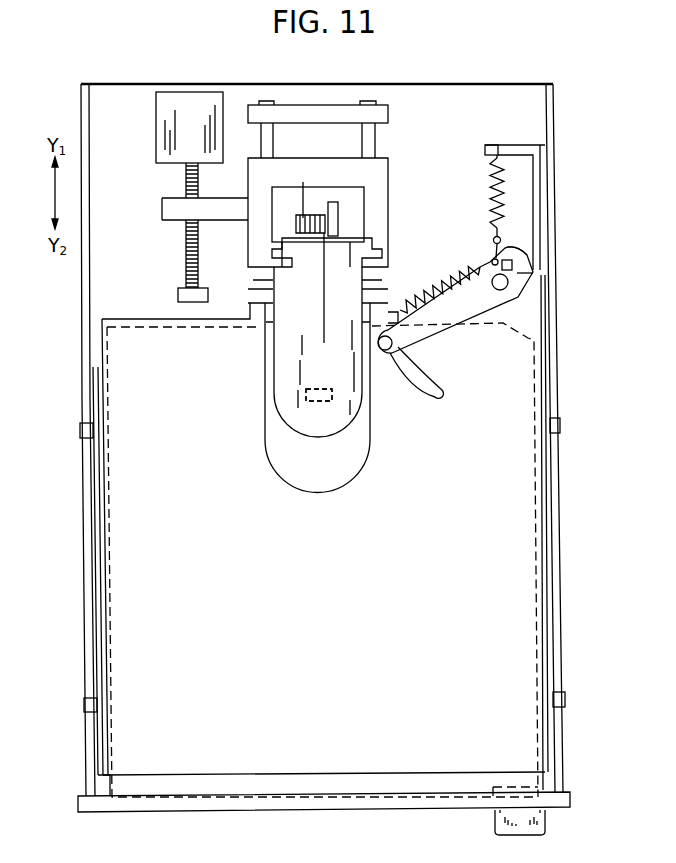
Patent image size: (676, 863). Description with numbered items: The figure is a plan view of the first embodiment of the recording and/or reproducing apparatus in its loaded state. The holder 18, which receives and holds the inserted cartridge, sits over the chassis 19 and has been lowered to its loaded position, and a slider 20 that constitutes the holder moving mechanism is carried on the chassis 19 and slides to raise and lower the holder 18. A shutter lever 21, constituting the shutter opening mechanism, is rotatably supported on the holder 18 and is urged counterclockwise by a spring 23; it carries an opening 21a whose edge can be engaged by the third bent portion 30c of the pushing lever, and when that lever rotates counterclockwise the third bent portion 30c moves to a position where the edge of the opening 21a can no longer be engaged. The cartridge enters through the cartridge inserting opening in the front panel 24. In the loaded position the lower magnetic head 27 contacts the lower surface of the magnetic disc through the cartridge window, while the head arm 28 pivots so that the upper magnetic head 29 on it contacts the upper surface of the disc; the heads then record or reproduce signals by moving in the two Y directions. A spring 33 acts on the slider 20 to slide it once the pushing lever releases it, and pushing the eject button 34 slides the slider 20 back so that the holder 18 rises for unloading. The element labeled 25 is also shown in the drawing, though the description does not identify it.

The holder 18 is at (530, 537).
The chassis 19 is at (459, 87).
The slider 20 is at (540, 194).
The shutter lever 21 is at (453, 322).
The opening 21a is at (493, 258).
The spring 23 is at (438, 290).
The front panel 24 is at (305, 812).
The roller 25 is at (387, 352).
The lower magnetic head 27 is at (271, 409).
The head arm 28 is at (278, 358).
The upper magnetic head 29 is at (304, 395).
The third bent portion 30c is at (513, 246).
The spring 33 is at (490, 188).
The eject button 34 is at (497, 822).